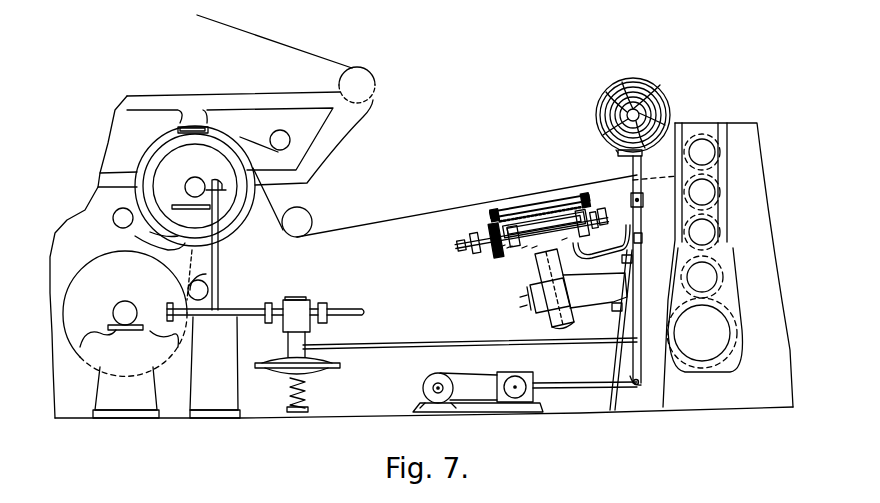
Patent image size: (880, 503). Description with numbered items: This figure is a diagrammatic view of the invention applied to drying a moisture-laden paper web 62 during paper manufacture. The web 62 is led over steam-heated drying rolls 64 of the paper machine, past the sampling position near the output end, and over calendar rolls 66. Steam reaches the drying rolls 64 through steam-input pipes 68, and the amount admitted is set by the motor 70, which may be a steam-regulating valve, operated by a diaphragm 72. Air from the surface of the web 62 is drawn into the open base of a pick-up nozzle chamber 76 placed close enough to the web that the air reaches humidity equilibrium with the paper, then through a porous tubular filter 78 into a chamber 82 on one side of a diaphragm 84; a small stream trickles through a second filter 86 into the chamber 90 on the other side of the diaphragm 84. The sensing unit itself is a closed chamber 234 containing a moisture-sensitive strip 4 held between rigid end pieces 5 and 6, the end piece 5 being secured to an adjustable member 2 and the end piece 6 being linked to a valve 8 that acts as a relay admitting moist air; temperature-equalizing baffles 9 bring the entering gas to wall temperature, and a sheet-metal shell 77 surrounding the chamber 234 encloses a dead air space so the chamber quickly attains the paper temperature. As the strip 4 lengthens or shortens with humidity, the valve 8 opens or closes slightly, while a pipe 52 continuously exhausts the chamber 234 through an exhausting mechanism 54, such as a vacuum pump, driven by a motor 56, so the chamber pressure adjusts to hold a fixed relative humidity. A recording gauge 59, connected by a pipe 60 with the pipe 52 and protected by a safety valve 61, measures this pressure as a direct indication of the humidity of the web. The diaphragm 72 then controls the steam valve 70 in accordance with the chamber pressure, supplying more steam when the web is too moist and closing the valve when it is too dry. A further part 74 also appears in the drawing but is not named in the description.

The adjustable member 2 is at (596, 206).
The moisture-sensitive strip 4 is at (532, 248).
The rigid end piece 5 is at (562, 240).
The end piece 6 is at (522, 248).
The valve 8 is at (500, 247).
The temperature-equalizing baffles 9 is at (507, 248).
The pipe 52 is at (643, 372).
The exhausting mechanism 54 is at (520, 372).
The motor 56 is at (452, 378).
The recording gauge 59 is at (660, 90).
The pipe 60 is at (632, 162).
The safety valve 61 is at (633, 195).
The paper web 62 is at (447, 210).
The drying rolls 64 is at (199, 160).
The calendar rolls 66 is at (706, 232).
The steam-input pipes 68 is at (218, 247).
The motor 70 is at (300, 305).
The diaphragm 72 is at (340, 364).
The shaft 74 is at (420, 343).
The pick-up nozzle chamber 76 is at (590, 180).
The sheet-metal shell 77 is at (573, 250).
The tubular filter 78 is at (537, 192).
The chamber 82 is at (496, 255).
The diaphragm 84 is at (452, 259).
The second filter 86 is at (537, 191).
The chamber 90 is at (527, 209).
The chamber 234 is at (530, 255).